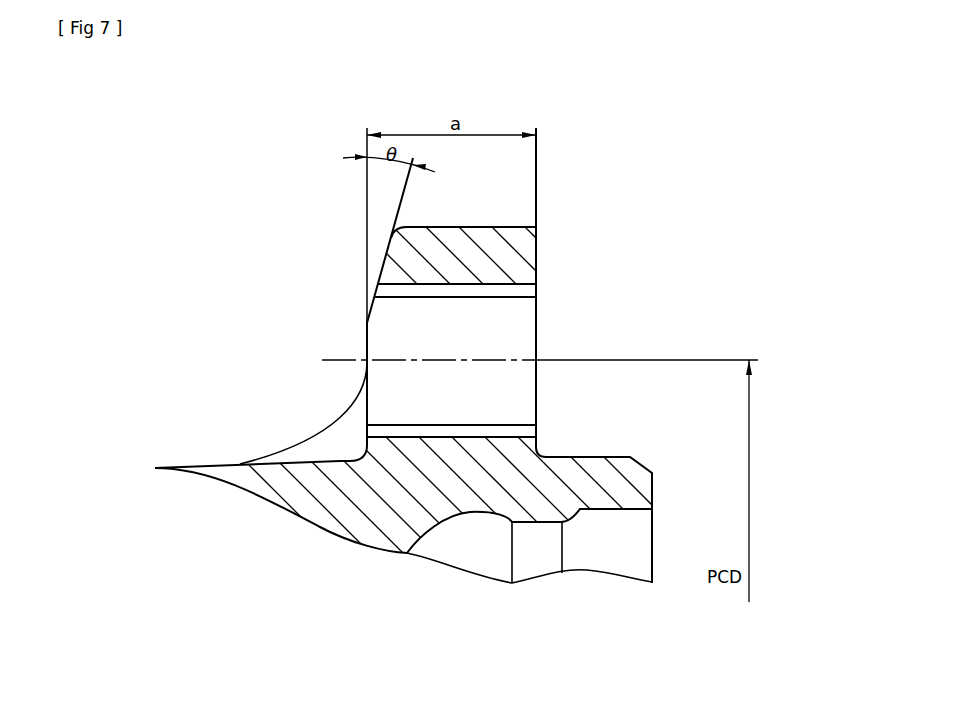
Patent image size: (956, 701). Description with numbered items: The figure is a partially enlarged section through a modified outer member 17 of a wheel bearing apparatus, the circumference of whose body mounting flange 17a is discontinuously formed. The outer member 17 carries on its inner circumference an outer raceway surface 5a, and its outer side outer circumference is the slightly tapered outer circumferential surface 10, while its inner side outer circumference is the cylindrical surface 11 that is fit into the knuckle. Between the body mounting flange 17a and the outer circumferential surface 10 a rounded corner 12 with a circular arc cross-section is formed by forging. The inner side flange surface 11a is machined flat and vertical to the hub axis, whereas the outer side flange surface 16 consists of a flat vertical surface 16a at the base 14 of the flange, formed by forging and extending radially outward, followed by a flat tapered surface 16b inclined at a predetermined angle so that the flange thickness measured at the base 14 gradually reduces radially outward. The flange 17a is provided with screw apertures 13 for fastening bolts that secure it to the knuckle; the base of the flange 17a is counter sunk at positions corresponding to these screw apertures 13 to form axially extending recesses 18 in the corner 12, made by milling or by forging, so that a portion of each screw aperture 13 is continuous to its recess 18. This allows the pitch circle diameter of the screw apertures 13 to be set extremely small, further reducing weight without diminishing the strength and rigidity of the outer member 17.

The outer raceway surface 5a is at (474, 513).
The outer circumferential surface 10 is at (208, 465).
The cylindrical surface 11 is at (583, 458).
The inner side flange surface 11a is at (537, 370).
The rounded corner 12 is at (323, 426).
The screw aperture 13 is at (505, 293).
The base of the flange 14 is at (365, 358).
The outer side flange surface 16 is at (324, 260).
The flat vertical surface 16a is at (366, 342).
The flat tapered surface 16b is at (384, 256).
The outer member 17 is at (267, 478).
The body mounting flange 17a is at (508, 247).
The recess 18 is at (340, 442).